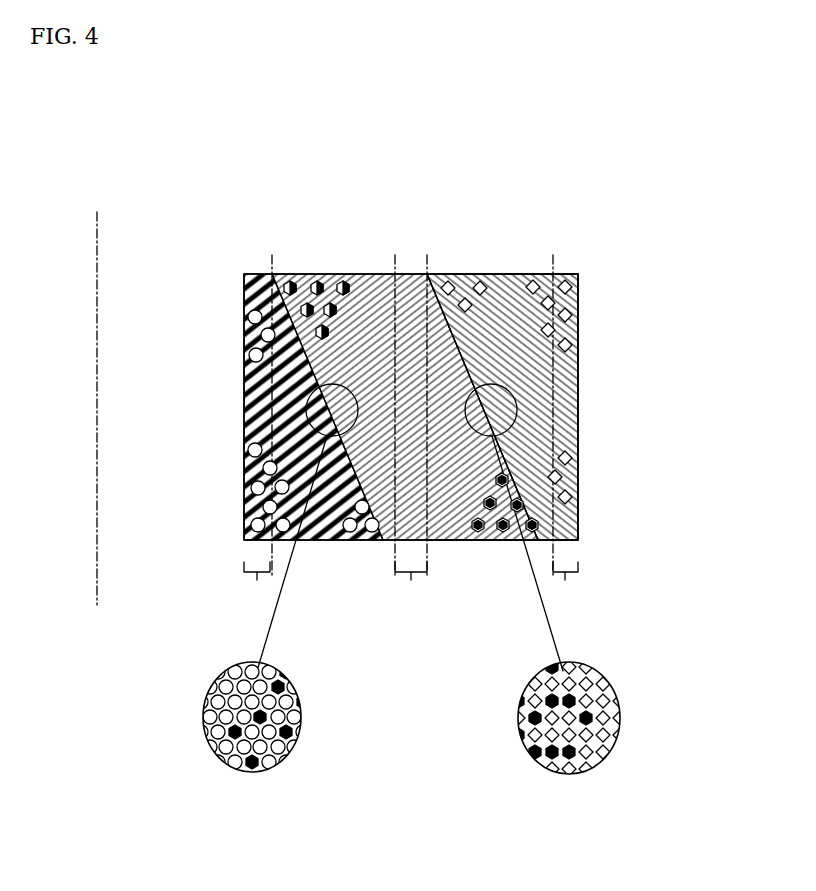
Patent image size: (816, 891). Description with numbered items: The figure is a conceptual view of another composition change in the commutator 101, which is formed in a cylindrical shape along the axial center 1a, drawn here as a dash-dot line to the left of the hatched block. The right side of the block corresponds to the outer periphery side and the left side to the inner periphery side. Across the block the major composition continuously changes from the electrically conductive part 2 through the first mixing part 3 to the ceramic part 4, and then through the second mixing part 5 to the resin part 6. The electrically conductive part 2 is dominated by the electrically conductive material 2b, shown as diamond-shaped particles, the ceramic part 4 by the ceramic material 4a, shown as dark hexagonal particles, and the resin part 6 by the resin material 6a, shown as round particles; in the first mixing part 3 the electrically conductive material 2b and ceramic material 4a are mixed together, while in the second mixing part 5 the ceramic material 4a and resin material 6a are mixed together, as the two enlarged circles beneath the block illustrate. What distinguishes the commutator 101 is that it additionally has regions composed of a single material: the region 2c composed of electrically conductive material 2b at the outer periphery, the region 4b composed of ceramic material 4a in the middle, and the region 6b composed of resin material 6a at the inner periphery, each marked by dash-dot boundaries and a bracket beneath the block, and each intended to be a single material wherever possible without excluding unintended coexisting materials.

The commutator 101 is at (205, 180).
The axial center 1a is at (97, 232).
The electrically conductive part 2 is at (578, 272).
The electrically conductive material 2b is at (578, 330).
The region composed of electrically conductive material 2c is at (568, 433).
The first mixing part 3 is at (492, 258).
The ceramic part 4 is at (420, 260).
The ceramic material 4a is at (500, 535).
The region composed of ceramic material 4b is at (411, 586).
The second mixing part 5 is at (330, 260).
The resin part 6 is at (244, 275).
The resin material 6a is at (248, 440).
The region composed of resin material 6b is at (255, 434).